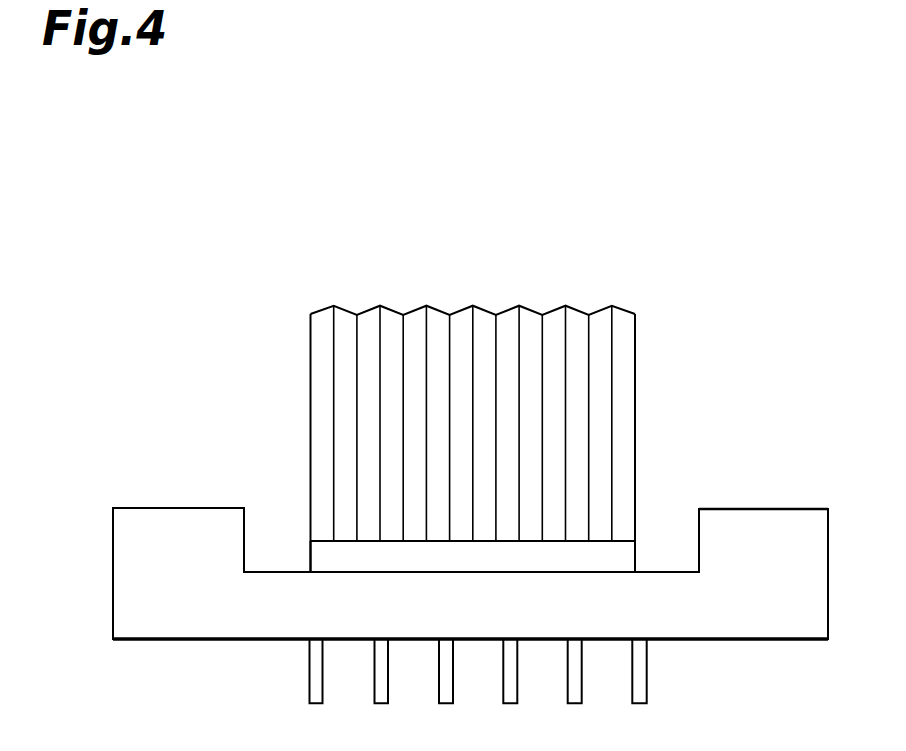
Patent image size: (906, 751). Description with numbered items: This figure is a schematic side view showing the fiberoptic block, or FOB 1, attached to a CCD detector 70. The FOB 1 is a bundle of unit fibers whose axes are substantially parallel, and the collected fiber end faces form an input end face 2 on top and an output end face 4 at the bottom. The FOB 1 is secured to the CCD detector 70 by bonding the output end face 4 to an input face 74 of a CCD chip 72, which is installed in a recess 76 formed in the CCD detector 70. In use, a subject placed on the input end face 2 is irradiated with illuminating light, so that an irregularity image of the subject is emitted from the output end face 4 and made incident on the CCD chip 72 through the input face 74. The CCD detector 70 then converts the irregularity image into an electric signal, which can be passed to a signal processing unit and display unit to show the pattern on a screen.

The fiberoptic block (FOB) 1 is at (491, 470).
The input end face 2 is at (596, 307).
The output end face 4 is at (323, 541).
The CCD detector 70 is at (822, 493).
The CCD chip 72 is at (620, 558).
The input face 74 is at (347, 540).
The recess 76 is at (678, 523).